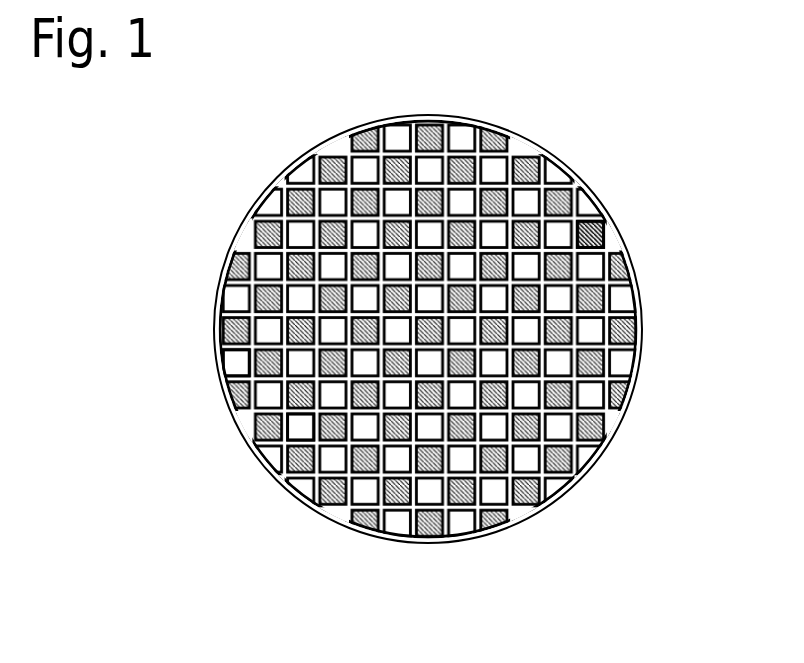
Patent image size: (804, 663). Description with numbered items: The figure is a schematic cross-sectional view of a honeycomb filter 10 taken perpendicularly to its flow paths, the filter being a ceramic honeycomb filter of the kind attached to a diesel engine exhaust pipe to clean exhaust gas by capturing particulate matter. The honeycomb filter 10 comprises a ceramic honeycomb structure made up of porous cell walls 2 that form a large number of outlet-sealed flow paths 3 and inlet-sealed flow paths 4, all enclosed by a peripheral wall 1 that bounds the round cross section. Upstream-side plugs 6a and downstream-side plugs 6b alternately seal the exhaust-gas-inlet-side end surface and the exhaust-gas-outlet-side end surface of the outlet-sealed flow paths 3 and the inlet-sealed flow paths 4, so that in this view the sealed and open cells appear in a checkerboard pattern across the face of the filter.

The honeycomb filter 10 is at (438, 309).
The peripheral wall 1 is at (560, 163).
The cell walls 2 is at (250, 368).
The outlet-sealed flow paths 3 is at (236, 434).
The inlet-sealed flow paths 4 is at (298, 428).
The upstream-side plugs 6a is at (647, 226).
The downstream-side plugs 6b is at (595, 232).